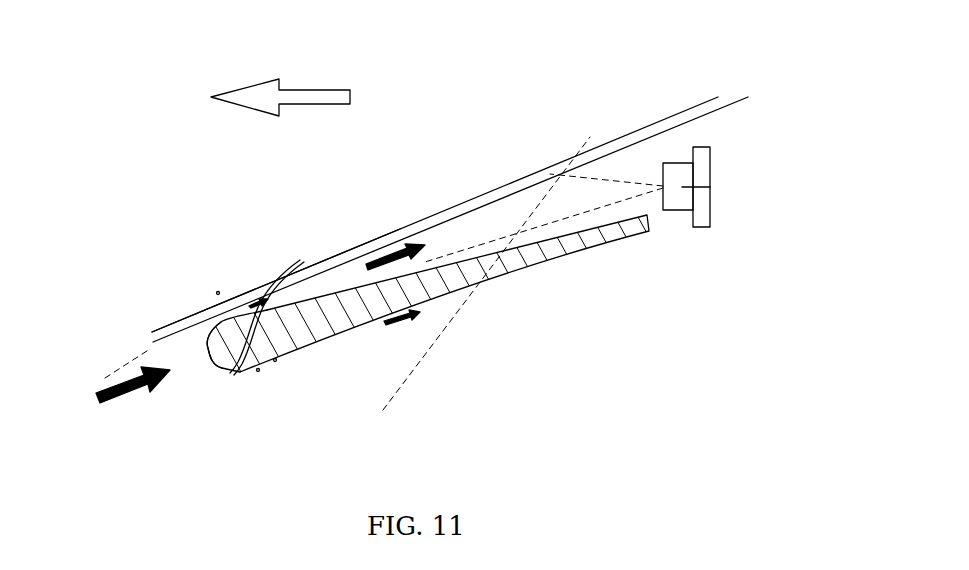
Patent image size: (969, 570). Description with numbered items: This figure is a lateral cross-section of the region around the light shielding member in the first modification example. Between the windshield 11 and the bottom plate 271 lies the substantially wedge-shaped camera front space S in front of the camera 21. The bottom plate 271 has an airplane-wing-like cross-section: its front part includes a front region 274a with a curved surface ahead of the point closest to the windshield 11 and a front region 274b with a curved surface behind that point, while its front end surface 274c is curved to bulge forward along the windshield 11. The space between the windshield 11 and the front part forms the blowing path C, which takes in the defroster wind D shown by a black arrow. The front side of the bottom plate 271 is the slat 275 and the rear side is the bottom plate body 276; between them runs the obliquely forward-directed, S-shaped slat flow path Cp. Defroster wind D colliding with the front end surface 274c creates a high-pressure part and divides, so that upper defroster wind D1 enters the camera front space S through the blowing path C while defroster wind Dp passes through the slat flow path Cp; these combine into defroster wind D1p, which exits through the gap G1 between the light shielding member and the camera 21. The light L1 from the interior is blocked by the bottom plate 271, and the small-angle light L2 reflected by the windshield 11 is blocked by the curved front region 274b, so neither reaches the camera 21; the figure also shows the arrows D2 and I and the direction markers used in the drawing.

The windshield 11 is at (660, 119).
The camera 21 is at (718, 187).
The camera front space S is at (503, 227).
The gap G1 is at (657, 217).
The bottom plate 271 is at (448, 331).
The slat 275 is at (227, 370).
The bottom plate body 276 is at (375, 322).
The front region 274a is at (175, 316).
The front region 274b is at (235, 296).
The front end surface 274c is at (202, 360).
The blowing path C is at (217, 291).
The slat flow path Cp is at (275, 362).
The defroster wind D is at (133, 396).
The defroster wind D1 is at (262, 296).
The defroster wind D1p is at (383, 248).
The second direction D2 is at (405, 330).
The defroster wind Dp is at (258, 372).
The image I is at (190, 344).
The light L1 is at (472, 293).
The light L2 is at (102, 373).